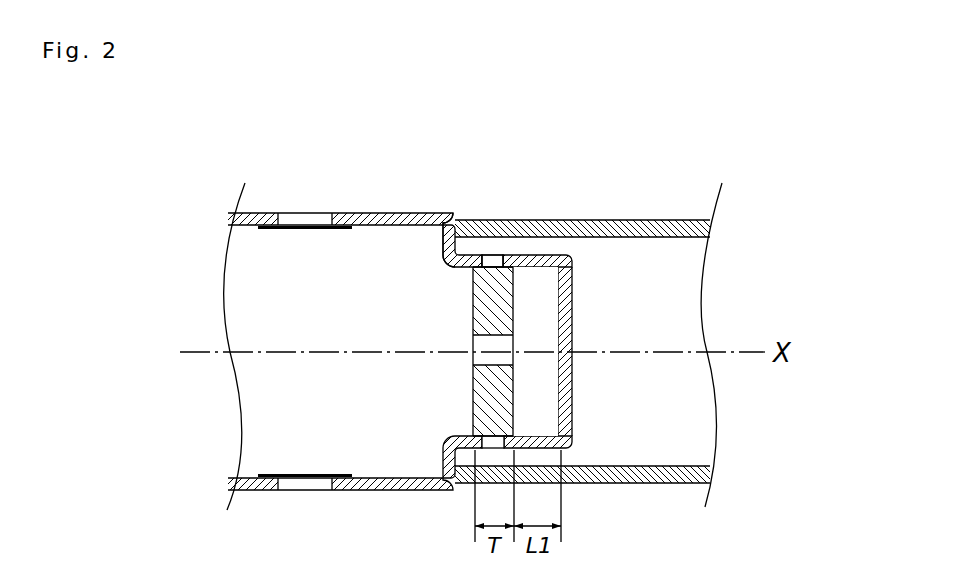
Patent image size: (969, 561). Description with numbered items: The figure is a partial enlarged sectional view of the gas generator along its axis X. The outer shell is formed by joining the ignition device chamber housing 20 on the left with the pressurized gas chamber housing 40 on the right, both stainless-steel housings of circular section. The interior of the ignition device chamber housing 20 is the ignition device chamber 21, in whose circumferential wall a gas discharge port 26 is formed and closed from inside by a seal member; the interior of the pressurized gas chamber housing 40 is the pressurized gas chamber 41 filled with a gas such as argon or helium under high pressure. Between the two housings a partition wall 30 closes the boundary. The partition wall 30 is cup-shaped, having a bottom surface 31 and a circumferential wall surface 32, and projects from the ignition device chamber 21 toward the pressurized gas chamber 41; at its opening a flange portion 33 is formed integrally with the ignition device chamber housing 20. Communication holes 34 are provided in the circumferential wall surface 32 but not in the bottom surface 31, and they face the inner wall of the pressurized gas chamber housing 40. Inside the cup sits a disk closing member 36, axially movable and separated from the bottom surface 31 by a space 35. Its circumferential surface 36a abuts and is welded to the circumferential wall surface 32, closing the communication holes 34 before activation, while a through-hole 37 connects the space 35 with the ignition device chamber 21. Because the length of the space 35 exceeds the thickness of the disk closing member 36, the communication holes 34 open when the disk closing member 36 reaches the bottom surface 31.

The ignition device chamber housing 20 is at (378, 212).
The ignition device chamber 21 is at (298, 308).
The gas discharge port 26 is at (306, 212).
The partition wall 30 is at (560, 302).
The bottom surface 31 is at (572, 294).
The circumferential wall surface 32 is at (541, 253).
The flange portion 33 is at (466, 243).
The communication holes 34 is at (497, 258).
The space 35 is at (535, 351).
The disk closing member 36 is at (462, 293).
The circumferential surface 36a is at (481, 257).
The through-hole 37 is at (483, 356).
The pressurized gas chamber housing 40 is at (630, 218).
The pressurized gas chamber 41 is at (667, 321).